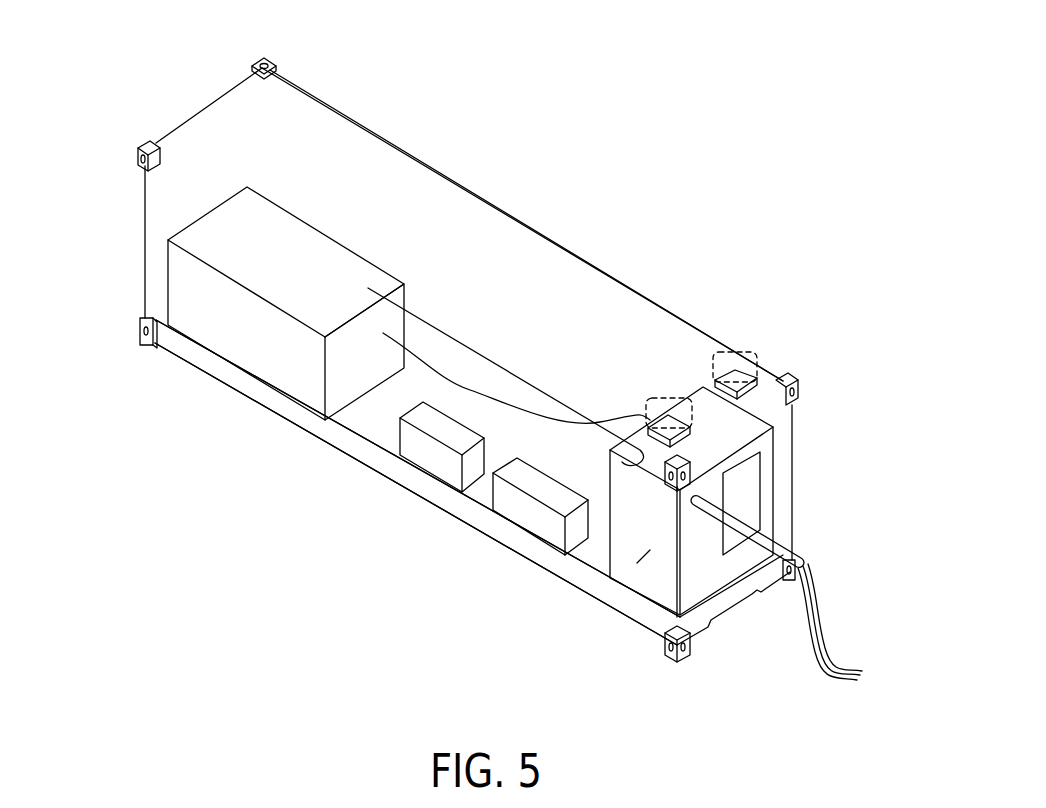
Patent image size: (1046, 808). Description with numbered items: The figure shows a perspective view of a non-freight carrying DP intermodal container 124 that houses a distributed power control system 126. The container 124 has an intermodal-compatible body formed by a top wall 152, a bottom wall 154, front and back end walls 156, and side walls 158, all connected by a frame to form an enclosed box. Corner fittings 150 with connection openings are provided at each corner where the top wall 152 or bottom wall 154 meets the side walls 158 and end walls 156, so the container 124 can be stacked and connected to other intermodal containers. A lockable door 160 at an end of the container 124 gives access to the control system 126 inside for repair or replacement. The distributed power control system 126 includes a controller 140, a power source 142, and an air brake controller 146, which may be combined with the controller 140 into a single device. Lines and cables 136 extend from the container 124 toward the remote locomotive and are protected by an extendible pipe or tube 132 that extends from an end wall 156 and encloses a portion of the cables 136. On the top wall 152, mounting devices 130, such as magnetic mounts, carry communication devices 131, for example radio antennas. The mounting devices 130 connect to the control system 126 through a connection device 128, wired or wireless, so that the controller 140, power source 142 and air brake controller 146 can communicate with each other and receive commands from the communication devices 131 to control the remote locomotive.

The non-freight carrying DP intermodal container 124 is at (226, 94).
The distributed power control system 126 is at (271, 357).
The connection device 128 is at (466, 382).
The mounting device 130 is at (760, 382).
The communication device 131 is at (658, 400).
The extendible pipe or tube 132 is at (778, 566).
The lines and cables 136 is at (848, 668).
The controller 140 is at (435, 466).
The power source 142 is at (316, 235).
The air brake controller 146 is at (522, 520).
The corner fittings 150 is at (267, 59).
The top wall 152 is at (444, 190).
The bottom wall 154 is at (325, 451).
The end walls 156 is at (142, 237).
The side walls 158 is at (222, 377).
The lockable door 160 is at (756, 512).